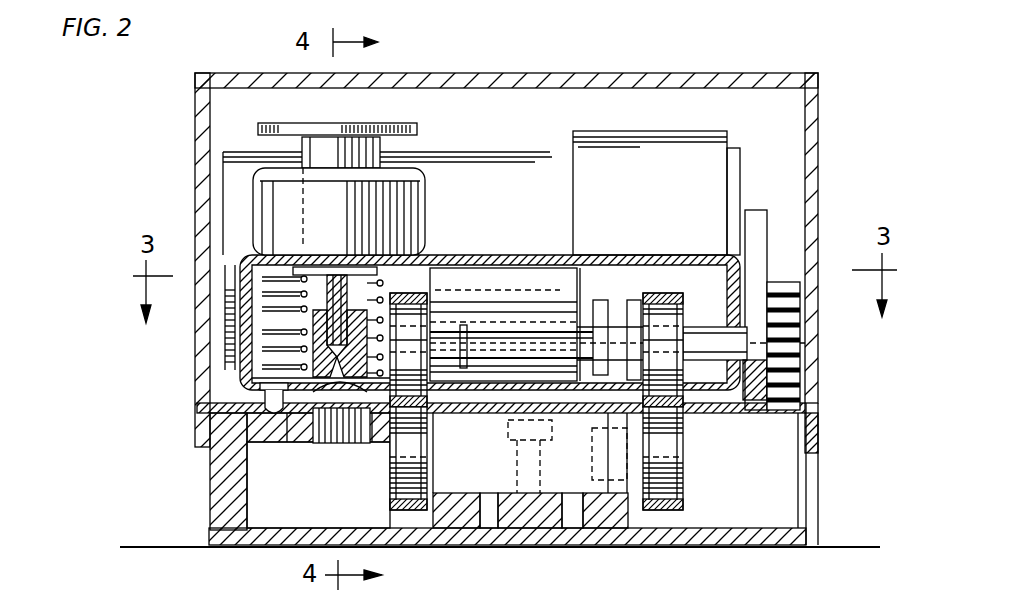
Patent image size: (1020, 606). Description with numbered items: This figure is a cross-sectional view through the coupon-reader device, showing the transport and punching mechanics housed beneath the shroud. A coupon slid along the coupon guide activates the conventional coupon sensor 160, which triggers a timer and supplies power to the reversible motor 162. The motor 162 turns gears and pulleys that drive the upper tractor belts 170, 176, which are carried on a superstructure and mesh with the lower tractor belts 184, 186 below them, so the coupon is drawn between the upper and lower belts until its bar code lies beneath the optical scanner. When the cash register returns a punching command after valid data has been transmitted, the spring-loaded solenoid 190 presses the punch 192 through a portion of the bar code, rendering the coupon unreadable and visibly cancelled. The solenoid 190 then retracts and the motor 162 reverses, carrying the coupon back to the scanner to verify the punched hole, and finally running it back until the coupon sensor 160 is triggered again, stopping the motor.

The coupon sensor 160 is at (507, 500).
The reversible motor 162 is at (627, 132).
The upper tractor belt 170 is at (665, 293).
The upper tractor belt 176 is at (412, 292).
The lower tractor belt 184 is at (668, 517).
The lower tractor belt 186 is at (413, 510).
The solenoid 190 is at (353, 216).
The punch 192 is at (277, 345).